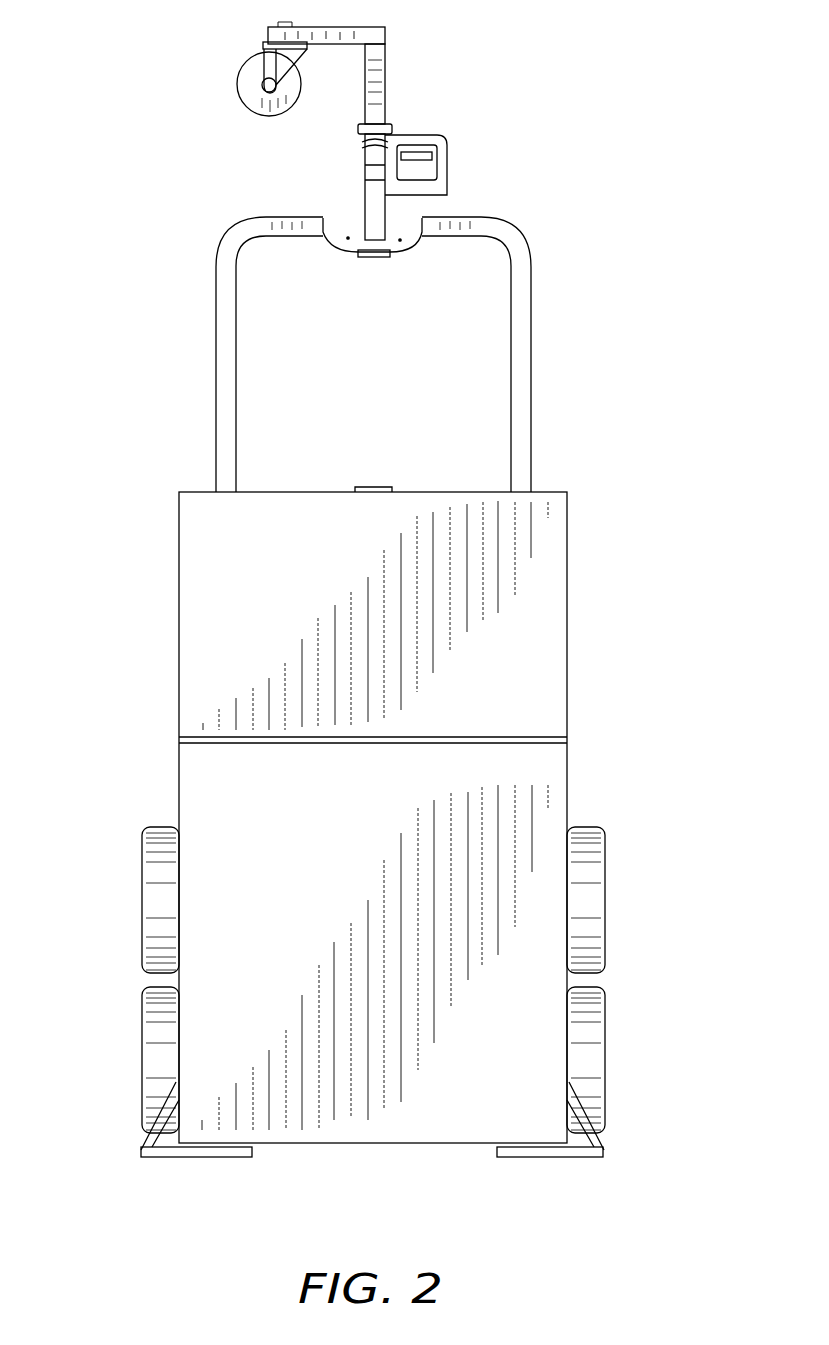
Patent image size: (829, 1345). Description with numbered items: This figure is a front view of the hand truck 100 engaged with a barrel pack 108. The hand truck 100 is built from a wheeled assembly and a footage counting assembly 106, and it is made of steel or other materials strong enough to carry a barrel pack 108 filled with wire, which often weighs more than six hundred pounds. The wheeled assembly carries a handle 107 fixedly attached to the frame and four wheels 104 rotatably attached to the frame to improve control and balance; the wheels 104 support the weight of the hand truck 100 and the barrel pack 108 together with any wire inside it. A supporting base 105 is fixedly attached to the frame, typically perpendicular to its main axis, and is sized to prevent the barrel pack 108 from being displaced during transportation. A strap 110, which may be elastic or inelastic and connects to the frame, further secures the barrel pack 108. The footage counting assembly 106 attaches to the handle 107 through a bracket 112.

The hand truck 100 is at (655, 58).
The wheels 104 is at (140, 895).
The supporting base 105 is at (602, 1152).
The footage counting assembly 106 is at (452, 47).
The handle 107 is at (520, 380).
The barrel pack 108 is at (568, 557).
The strap 110 is at (528, 738).
The bracket 112 is at (407, 233).